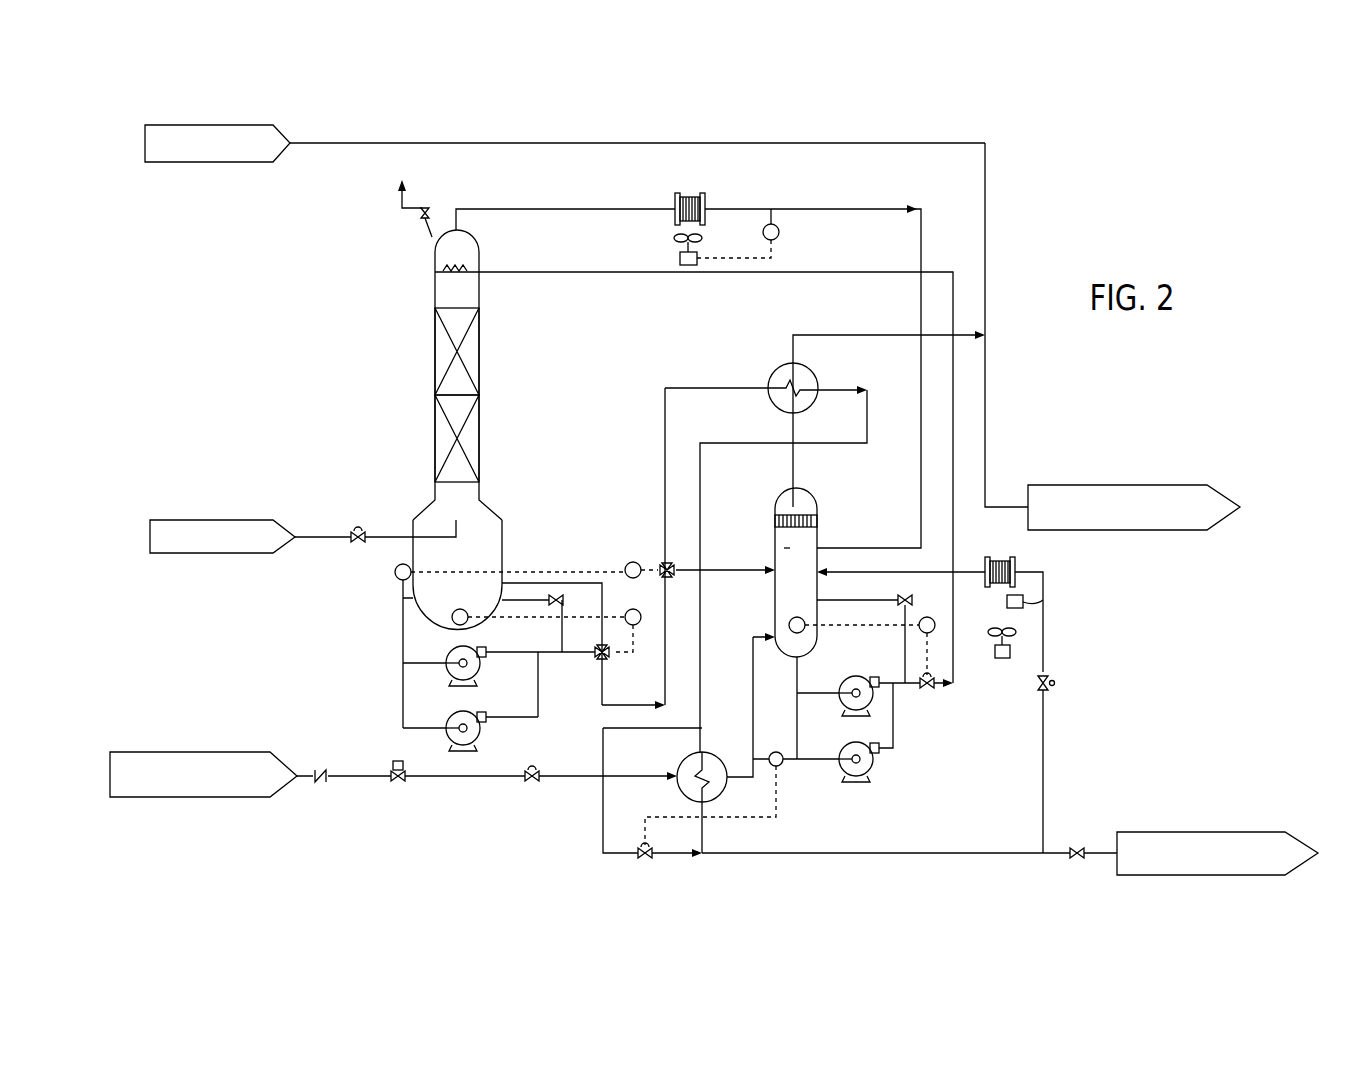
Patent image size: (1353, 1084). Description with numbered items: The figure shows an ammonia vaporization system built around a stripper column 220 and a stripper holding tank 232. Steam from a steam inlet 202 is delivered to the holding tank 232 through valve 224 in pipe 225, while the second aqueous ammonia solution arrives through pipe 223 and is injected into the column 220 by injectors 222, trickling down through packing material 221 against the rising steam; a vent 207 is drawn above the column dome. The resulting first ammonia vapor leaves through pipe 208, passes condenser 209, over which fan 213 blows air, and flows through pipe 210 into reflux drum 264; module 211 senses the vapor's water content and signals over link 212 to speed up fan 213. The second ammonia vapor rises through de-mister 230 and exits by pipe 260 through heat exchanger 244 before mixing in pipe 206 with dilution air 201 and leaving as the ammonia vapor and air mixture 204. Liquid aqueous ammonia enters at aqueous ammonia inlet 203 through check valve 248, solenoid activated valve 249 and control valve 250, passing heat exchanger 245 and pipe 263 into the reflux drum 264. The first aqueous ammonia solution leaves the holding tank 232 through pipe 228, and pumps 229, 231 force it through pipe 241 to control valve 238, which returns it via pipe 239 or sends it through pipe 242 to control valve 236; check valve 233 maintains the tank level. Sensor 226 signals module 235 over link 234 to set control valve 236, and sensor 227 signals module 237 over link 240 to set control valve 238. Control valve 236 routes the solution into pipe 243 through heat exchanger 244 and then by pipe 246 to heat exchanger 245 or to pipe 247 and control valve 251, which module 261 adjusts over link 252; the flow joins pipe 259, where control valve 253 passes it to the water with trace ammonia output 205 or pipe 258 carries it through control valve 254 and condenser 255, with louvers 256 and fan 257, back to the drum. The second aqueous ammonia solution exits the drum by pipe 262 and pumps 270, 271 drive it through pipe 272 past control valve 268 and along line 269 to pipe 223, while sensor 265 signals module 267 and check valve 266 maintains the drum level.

The dilution air 201 is at (268, 125).
The steam inlet 202 is at (256, 520).
The aqueous ammonia inlet 203 is at (210, 752).
The ammonia vapor and air mixture output 204 is at (1142, 485).
The water with trace ammonia output 205 is at (1205, 832).
The pipe 206 is at (988, 415).
The vent relief valve 207 is at (404, 228).
The pipe 208 is at (592, 209).
The condenser 209 is at (706, 190).
The pipe 210 is at (838, 209).
The module 211 is at (780, 234).
The link 212 is at (773, 258).
The fan 213 is at (680, 258).
The stripper column 220 is at (480, 383).
The packing material 221 is at (438, 356).
The injectors 222 is at (441, 273).
The pipe 223 is at (510, 274).
The valve 224 is at (358, 528).
The pipe 225 is at (397, 567).
The sensor 226 is at (401, 598).
The sensor 227 is at (460, 609).
The pipe 228 is at (402, 655).
The pump 229 is at (487, 664).
The de-mister 230 is at (819, 522).
The pump 231 is at (486, 712).
The stripper holding tank 232 is at (503, 537).
The check valve 233 is at (563, 600).
The link 234 is at (616, 571).
The module 235 is at (633, 562).
The control valve 236 is at (668, 579).
The module 237 is at (635, 645).
The control valve 238 is at (600, 661).
The pipe 239 is at (633, 609).
The link 240 is at (523, 618).
The pipe 241 is at (540, 654).
The pipe 242 is at (612, 705).
The pipe 243 is at (665, 400).
The heat exchanger 244 is at (815, 371).
The heat exchanger 245 is at (712, 757).
The pipe 246 is at (702, 511).
The pipe 247 is at (603, 820).
The check valve 248 is at (320, 783).
The solenoid activated valve 249 is at (398, 783).
The control valve 250 is at (530, 782).
The control valve 251 is at (645, 861).
The link 252 is at (752, 818).
The control valve 253 is at (1077, 861).
The control valve 254 is at (1055, 683).
The condenser 255 is at (1018, 562).
The louvers 256 is at (1043, 600).
The fan 257 is at (1010, 651).
The pipe 258 is at (1045, 738).
The pipe 259 is at (915, 856).
The pipe 260 is at (862, 335).
The module 261 is at (782, 766).
The pipe 262 is at (799, 676).
The pipe 263 is at (752, 661).
The reflux drum 264 is at (786, 550).
The sensor 265 is at (797, 617).
The check valve 266 is at (907, 600).
The module 267 is at (935, 630).
The control valve 268 is at (930, 690).
The recycle line 269 is at (955, 533).
The pump 270 is at (875, 712).
The pump 271 is at (872, 772).
The pipe 272 is at (895, 720).